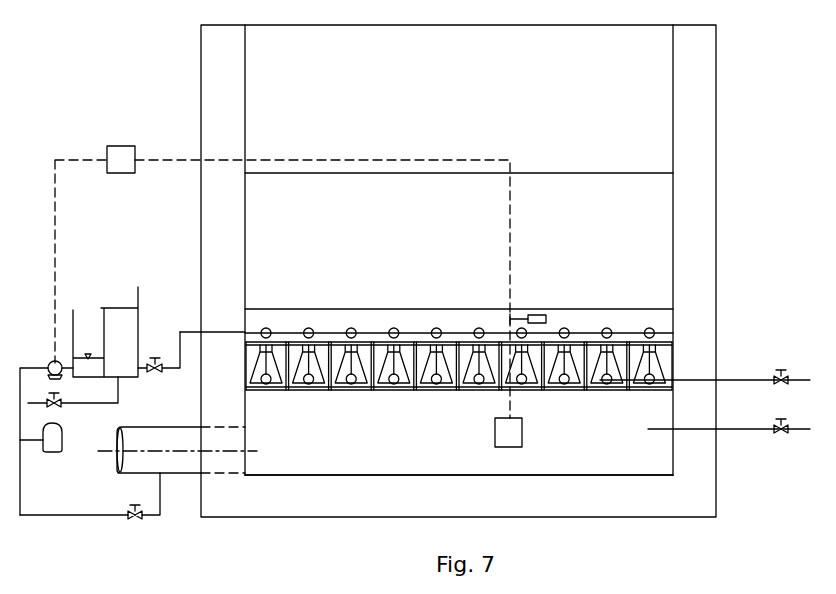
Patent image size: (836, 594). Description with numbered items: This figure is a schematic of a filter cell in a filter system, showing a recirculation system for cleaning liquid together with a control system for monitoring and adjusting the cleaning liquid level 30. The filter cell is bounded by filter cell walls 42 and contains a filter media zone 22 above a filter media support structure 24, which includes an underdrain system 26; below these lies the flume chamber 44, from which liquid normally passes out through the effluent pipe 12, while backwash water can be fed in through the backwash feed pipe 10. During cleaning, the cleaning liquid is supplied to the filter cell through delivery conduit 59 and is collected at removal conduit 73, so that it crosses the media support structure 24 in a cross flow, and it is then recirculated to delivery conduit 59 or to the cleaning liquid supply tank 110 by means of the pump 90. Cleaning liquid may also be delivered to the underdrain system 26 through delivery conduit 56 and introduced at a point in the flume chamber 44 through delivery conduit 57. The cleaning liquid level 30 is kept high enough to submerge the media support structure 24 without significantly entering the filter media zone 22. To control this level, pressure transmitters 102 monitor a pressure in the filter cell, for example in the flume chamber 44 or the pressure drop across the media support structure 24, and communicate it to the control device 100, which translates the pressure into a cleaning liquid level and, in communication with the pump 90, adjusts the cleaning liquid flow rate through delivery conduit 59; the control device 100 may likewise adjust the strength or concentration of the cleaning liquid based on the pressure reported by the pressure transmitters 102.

The backwash feed pipe 10 is at (181, 482).
The effluent pipe 12 is at (140, 422).
The filter media zone 22 is at (459, 324).
The filter media support structure 24 is at (627, 342).
The underdrain system 26 is at (645, 392).
The cleaning liquid level 30 is at (383, 309).
The filter cell walls 42 is at (215, 59).
The flume chamber 44 is at (350, 465).
The delivery conduit 56 is at (745, 380).
The delivery conduit 57 is at (747, 430).
The delivery conduit 59 is at (150, 517).
The removal conduit 73 is at (213, 332).
The pump 90 is at (48, 363).
The control device 100 is at (118, 146).
The pressure transmitters 102 is at (538, 315).
The cleaning liquid supply tank 110 is at (60, 450).